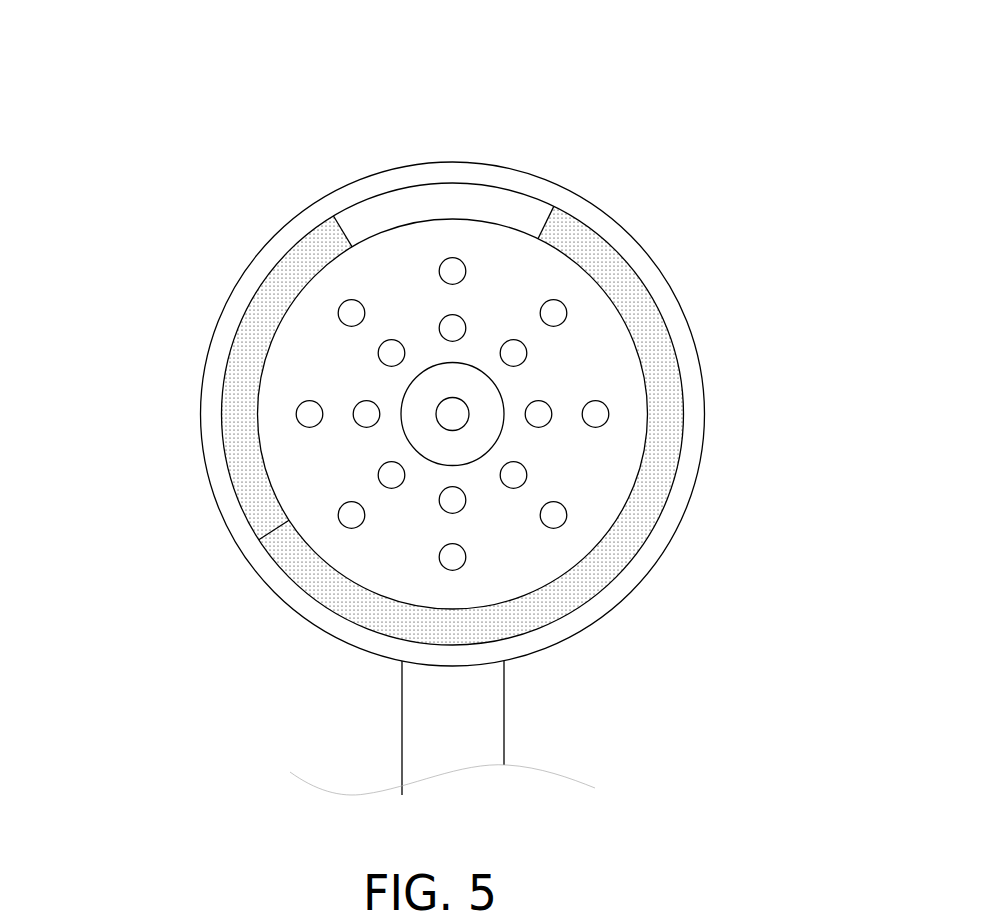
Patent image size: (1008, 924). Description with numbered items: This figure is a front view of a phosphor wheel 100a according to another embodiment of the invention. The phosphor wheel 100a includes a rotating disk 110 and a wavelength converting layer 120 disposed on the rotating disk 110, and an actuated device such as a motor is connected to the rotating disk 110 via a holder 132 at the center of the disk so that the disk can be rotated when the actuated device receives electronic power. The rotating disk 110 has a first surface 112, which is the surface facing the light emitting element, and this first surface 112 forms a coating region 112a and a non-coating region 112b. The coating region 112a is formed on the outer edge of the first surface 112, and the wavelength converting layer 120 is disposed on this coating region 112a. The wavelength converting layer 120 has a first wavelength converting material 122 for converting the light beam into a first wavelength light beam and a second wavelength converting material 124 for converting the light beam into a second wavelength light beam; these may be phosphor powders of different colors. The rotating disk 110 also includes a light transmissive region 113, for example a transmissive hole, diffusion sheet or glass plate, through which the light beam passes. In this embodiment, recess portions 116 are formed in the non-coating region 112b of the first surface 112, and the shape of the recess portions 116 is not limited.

The phosphor wheel 100a is at (220, 38).
The rotating disk 110 is at (622, 601).
The first surface 112 is at (774, 70).
The coating region 112a is at (628, 262).
The non-coating region 112b is at (540, 285).
The light transmissive region 113 is at (370, 207).
The recess portions 116 is at (455, 256).
The wavelength converting layer 120 is at (128, 360).
The first wavelength converting material 122 is at (250, 380).
The second wavelength converting material 124 is at (275, 547).
The holder 132 is at (483, 397).